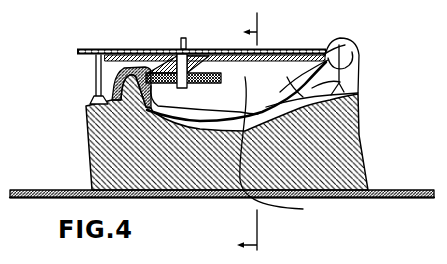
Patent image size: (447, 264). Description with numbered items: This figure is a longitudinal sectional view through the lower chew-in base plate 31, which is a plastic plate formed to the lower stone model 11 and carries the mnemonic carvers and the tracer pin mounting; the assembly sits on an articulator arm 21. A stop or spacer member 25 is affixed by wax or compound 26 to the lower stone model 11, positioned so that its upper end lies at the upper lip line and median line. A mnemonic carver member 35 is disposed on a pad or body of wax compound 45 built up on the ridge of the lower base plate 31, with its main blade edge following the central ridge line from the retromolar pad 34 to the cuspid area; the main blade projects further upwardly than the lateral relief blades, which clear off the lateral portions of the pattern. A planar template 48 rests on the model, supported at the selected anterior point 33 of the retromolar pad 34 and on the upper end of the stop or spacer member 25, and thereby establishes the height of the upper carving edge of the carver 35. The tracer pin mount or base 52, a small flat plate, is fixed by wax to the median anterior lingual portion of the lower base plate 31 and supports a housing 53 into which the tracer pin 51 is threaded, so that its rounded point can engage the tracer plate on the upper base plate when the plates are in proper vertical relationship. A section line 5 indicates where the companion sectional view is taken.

The section line 5- 5 is at (256, 131).
The lower stone model 11 is at (87, 143).
The articulator arm 21 is at (405, 198).
The stop or spacer member 25 is at (96, 73).
The wax or compound 26 is at (92, 100).
The lower chew-in base plate 31 is at (359, 94).
The selected anterior point 33 is at (361, 60).
The retromolar pad 34 is at (328, 49).
The mnemonic carver member 35 is at (321, 50).
The pad or body of wax compound 45 is at (286, 151).
The planar template 48 is at (77, 49).
The tracer pin 51 is at (181, 41).
The tracer pin mount or base 52 is at (206, 52).
The housing 53 is at (165, 50).